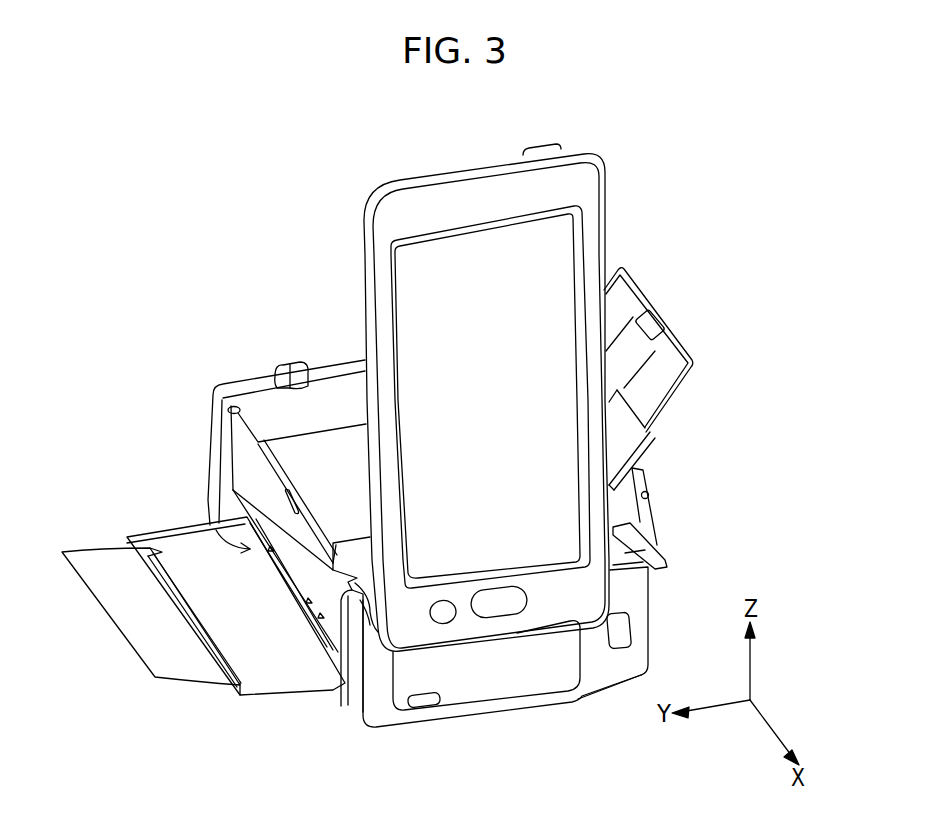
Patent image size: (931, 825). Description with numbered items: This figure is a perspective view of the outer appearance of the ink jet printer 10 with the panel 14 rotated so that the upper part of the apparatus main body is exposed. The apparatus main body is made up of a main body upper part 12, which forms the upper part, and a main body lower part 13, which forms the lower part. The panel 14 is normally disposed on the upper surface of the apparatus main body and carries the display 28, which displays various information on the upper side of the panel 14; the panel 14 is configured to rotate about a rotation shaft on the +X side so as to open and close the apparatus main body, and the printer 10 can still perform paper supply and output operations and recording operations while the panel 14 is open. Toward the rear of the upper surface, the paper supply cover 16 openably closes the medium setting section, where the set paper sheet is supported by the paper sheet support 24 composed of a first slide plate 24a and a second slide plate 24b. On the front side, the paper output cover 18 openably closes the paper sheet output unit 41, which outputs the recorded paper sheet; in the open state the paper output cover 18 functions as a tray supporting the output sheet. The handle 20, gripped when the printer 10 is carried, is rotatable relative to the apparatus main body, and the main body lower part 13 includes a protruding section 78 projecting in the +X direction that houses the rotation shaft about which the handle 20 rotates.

The ink jet printer 10 is at (262, 282).
The main body upper part 12 is at (645, 550).
The main body lower part 13 is at (352, 690).
The panel 14 is at (585, 186).
The paper supply cover 16 is at (655, 515).
The paper output cover 18 is at (297, 697).
The handle 20 is at (500, 707).
The paper sheet support 24 is at (778, 372).
The first slide plate 24a is at (647, 452).
The second slide plate 24b is at (673, 399).
The display 28 is at (543, 257).
The paper sheet output unit 41 is at (200, 521).
The protruding section 78 is at (518, 670).